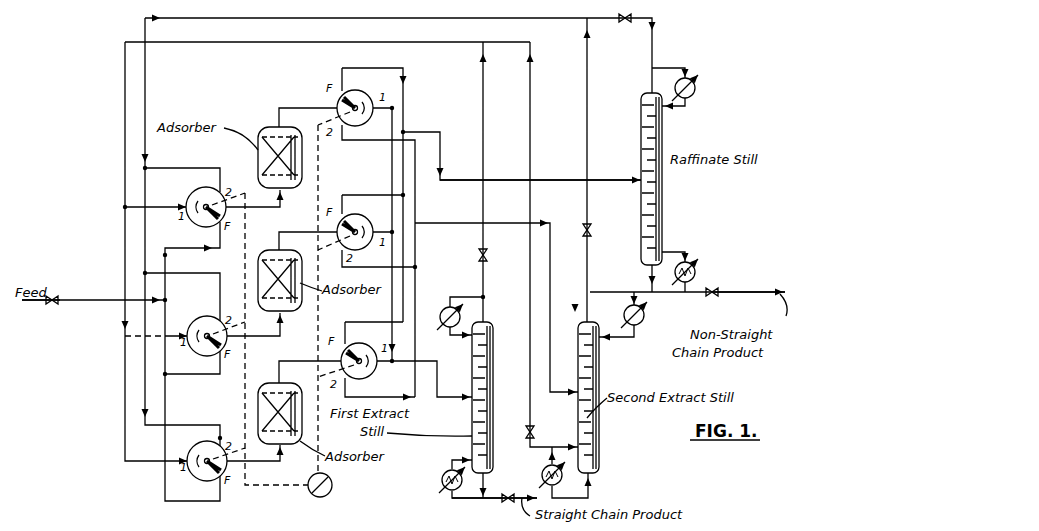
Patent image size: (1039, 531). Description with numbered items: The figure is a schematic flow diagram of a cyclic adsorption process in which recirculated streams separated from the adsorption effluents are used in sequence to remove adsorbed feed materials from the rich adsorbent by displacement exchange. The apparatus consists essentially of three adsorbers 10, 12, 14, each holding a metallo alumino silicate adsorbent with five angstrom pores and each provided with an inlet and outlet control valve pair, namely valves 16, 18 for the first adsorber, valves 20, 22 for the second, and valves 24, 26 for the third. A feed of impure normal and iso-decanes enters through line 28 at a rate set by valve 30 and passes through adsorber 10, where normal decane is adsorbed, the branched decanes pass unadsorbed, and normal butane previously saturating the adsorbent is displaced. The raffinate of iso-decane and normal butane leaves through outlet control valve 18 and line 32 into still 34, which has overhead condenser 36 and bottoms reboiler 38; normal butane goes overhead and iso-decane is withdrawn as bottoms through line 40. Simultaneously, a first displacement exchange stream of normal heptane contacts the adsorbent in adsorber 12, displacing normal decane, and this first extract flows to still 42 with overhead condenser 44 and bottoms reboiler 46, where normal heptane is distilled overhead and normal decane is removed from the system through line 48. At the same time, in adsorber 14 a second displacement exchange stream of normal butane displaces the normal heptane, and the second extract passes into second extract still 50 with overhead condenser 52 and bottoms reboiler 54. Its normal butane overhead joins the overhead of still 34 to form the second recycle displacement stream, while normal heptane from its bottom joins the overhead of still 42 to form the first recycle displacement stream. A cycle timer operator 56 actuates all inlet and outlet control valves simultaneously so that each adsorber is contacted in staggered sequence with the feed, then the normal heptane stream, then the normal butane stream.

The adsorber 10 is at (266, 128).
The adsorber 12 is at (268, 256).
The adsorber 14 is at (270, 389).
The inlet control valve 16 is at (212, 188).
The outlet control valve 18 is at (358, 100).
The inlet control valve 20 is at (214, 317).
The outlet control valve 22 is at (362, 222).
The inlet control valve 24 is at (210, 480).
The outlet control valve 26 is at (362, 346).
The line 28 is at (35, 302).
The valve 30 is at (54, 297).
The line 32 is at (570, 179).
The still 34 is at (662, 146).
The overhead condenser 36 is at (696, 90).
The bottoms reboiler 38 is at (696, 273).
The line 40 is at (725, 294).
The still 42 is at (493, 326).
The overhead condenser 44 is at (444, 306).
The bottoms reboiler 46 is at (441, 479).
The line 48 is at (496, 500).
The second extract still 50 is at (584, 325).
The overhead condenser 52 is at (643, 323).
The bottoms reboiler 54 is at (541, 476).
The cycle timer operator 56 is at (332, 489).